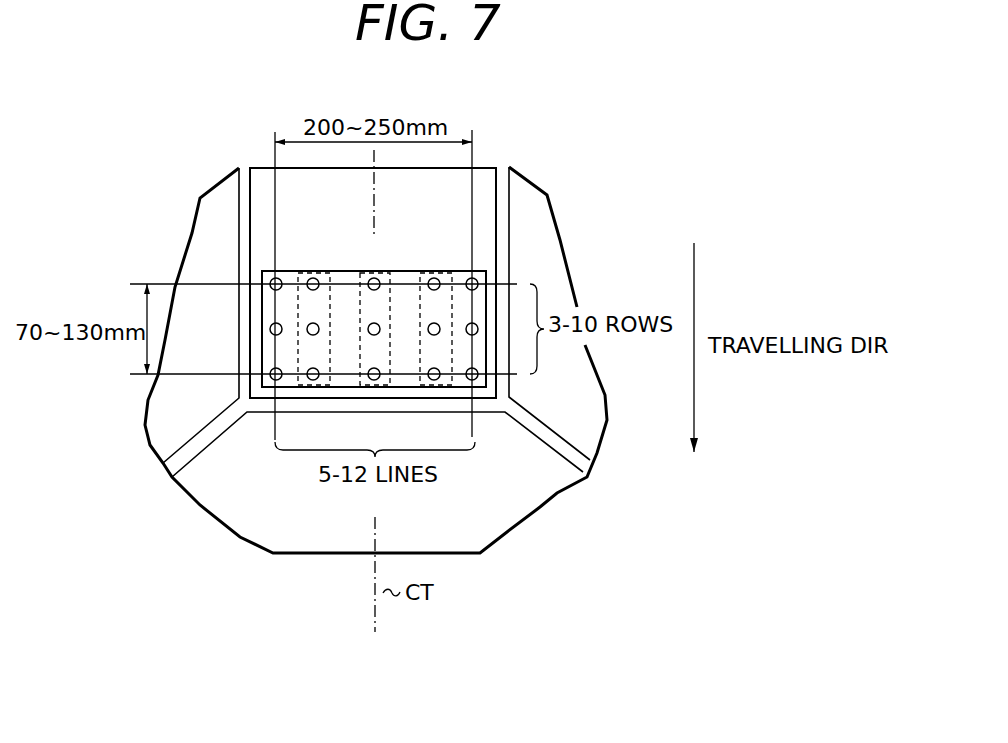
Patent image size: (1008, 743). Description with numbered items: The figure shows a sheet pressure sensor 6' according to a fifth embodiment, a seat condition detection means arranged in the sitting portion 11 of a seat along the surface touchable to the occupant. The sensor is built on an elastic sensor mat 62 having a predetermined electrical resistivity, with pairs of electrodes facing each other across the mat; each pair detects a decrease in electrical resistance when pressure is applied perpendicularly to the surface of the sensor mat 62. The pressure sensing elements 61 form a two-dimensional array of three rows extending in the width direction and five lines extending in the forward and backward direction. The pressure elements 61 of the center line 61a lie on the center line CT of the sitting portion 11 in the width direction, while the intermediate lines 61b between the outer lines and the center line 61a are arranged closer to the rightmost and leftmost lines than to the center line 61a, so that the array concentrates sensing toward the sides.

The sheet pressure sensor 6' is at (396, 360).
The sitting portion 11 is at (478, 178).
The sensor mat 62 is at (283, 270).
The pressure sensing element 61 is at (437, 277).
The center line 61a is at (390, 277).
The intermediate line 61b is at (335, 288).